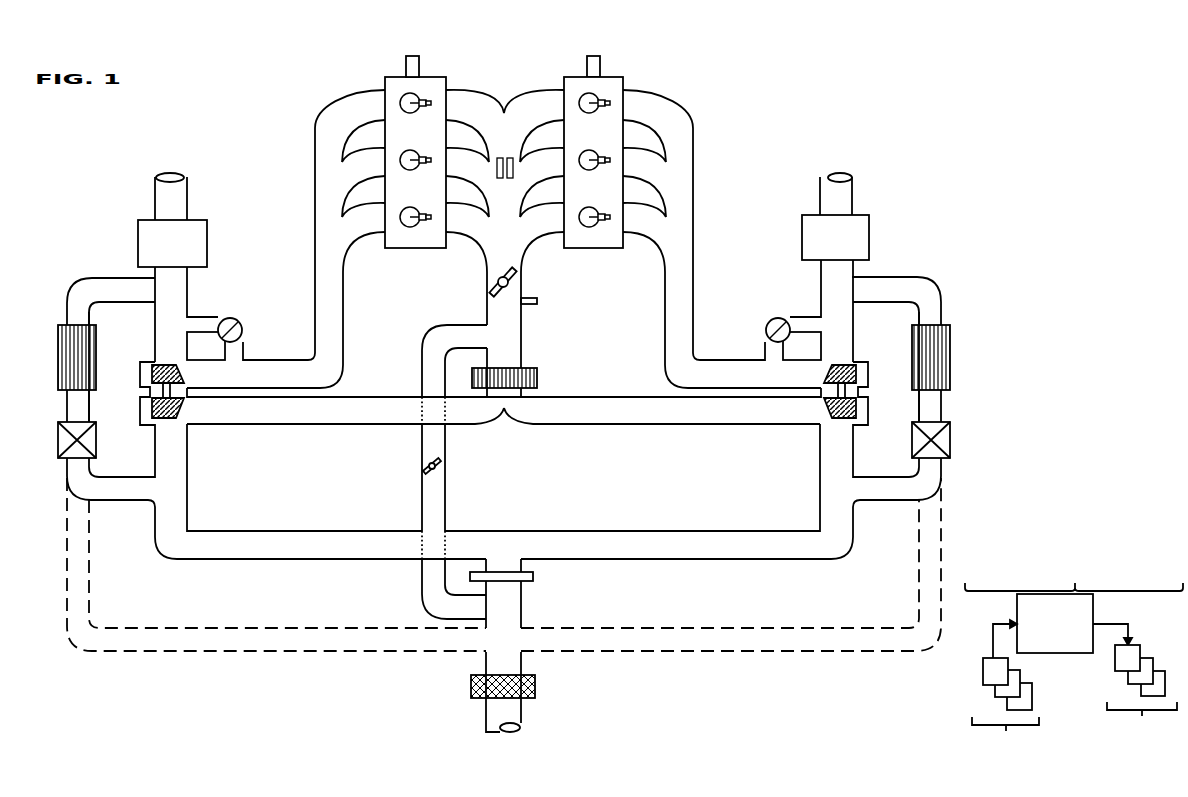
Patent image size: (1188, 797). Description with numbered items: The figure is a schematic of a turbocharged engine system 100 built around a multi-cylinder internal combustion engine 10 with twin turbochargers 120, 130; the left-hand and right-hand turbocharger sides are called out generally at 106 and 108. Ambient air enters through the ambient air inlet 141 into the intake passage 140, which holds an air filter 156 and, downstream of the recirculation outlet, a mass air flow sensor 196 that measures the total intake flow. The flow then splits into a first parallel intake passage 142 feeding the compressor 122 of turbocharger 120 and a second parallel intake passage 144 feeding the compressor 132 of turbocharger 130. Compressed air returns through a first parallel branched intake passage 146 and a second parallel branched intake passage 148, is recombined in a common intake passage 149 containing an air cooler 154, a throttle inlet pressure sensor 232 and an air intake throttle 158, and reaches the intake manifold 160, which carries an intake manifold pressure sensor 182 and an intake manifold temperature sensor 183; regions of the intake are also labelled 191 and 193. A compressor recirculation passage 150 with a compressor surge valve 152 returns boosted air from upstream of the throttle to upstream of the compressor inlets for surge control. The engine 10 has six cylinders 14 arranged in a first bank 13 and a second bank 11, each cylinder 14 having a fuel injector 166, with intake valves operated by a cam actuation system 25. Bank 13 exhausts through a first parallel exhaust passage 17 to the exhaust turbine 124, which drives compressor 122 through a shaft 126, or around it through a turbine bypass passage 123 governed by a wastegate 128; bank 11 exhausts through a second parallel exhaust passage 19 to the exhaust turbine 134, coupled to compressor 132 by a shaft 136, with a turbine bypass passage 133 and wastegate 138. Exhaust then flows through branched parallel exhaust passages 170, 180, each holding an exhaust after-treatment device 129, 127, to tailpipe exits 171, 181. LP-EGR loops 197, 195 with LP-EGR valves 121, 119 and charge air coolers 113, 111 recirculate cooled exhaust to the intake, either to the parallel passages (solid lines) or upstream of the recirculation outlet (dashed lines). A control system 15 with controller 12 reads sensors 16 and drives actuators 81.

The internal combustion engine 10 is at (789, 92).
The second bank 11 is at (388, 78).
The controller 12 is at (1055, 623).
The first bank 13 is at (612, 77).
The cylinder 14 is at (590, 149).
The control system 15 is at (625, 621).
The sensors 16 is at (1005, 711).
The first parallel exhaust passage 17 is at (693, 298).
The second parallel exhaust passage 19 is at (315, 292).
The intake valve cam actuation system 25 is at (419, 58).
The actuators 81 is at (1143, 697).
The turbocharged engine system 100 is at (1081, 82).
The first turbocharger side 106 is at (108, 238).
The second turbocharger side 108 is at (901, 250).
The charge air cooler 111 is at (94, 384).
The charge air cooler 113 is at (951, 380).
The LP-EGR valve 119 is at (97, 455).
The turbocharger 120 is at (840, 350).
The LP-EGR valve 121 is at (951, 447).
The compressor 122 is at (848, 424).
The turbine bypass passage 123 is at (810, 316).
The exhaust turbine 124 is at (857, 360).
The shaft 126 is at (858, 402).
The exhaust after-treatment device 127 is at (185, 250).
The wastegate 128 is at (768, 320).
The exhaust after-treatment device 129 is at (848, 246).
The turbocharger 130 is at (167, 350).
The compressor 132 is at (152, 422).
The turbine bypass passage 133 is at (197, 316).
The exhaust turbine 134 is at (152, 360).
The shaft 136 is at (150, 408).
The wastegate 138 is at (238, 320).
The intake passage 140 is at (522, 716).
The ambient air inlet 141 is at (520, 732).
The first parallel intake passage 142 is at (656, 531).
The second parallel intake passage 144 is at (298, 531).
The first parallel branched intake passage 146 is at (654, 426).
The second parallel branched intake passage 148 is at (278, 426).
The common intake passage 149 is at (523, 345).
The compressor recirculation passage 150 is at (448, 507).
The compressor surge valve 152 is at (424, 469).
The air cooler 154 is at (538, 378).
The air filter 156 is at (535, 684).
The air intake throttle 158 is at (500, 270).
The intake manifold 160 is at (502, 90).
The fuel injector 166 is at (603, 158).
The branched parallel exhaust passage 170 is at (820, 210).
The tailpipe exit 171 is at (822, 176).
The branched parallel exhaust passage 180 is at (187, 216).
The tailpipe exit 181 is at (185, 176).
The intake manifold pressure sensor 182 is at (486, 168).
The intake manifold temperature sensor 183 is at (526, 168).
The intake manifold 191 is at (275, 556).
The charge air passage 193 is at (268, 419).
The LP-EGR loop 195 is at (92, 278).
The mass air flow sensor 196 is at (546, 582).
The LP-EGR loop 197 is at (944, 300).
The throttle inlet pressure sensor 232 is at (538, 300).